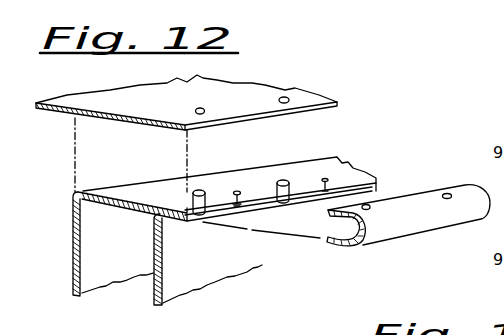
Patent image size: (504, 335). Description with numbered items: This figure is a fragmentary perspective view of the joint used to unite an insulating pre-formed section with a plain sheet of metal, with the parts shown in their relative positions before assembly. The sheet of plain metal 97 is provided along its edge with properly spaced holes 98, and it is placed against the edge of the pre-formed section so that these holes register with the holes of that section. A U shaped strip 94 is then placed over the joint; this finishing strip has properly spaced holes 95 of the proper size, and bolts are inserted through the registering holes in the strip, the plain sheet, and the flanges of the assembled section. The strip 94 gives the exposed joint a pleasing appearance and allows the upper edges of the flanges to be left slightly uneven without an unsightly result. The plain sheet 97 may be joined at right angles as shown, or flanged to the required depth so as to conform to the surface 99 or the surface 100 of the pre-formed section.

The U shaped strip 94 is at (412, 214).
The holes 95 is at (447, 194).
The sheet of plain metal 97 is at (112, 104).
The holes 98 is at (203, 109).
The surface 99 is at (71, 266).
The surface 100 is at (167, 287).